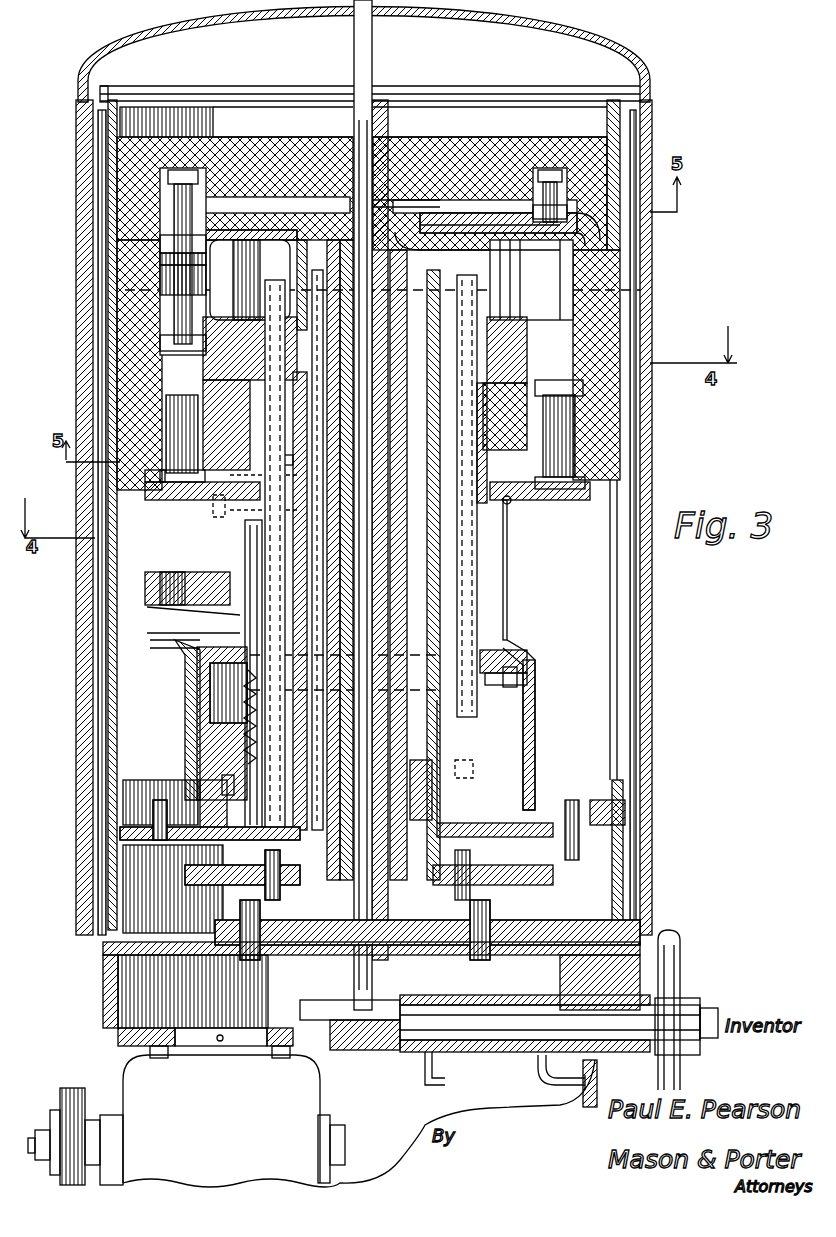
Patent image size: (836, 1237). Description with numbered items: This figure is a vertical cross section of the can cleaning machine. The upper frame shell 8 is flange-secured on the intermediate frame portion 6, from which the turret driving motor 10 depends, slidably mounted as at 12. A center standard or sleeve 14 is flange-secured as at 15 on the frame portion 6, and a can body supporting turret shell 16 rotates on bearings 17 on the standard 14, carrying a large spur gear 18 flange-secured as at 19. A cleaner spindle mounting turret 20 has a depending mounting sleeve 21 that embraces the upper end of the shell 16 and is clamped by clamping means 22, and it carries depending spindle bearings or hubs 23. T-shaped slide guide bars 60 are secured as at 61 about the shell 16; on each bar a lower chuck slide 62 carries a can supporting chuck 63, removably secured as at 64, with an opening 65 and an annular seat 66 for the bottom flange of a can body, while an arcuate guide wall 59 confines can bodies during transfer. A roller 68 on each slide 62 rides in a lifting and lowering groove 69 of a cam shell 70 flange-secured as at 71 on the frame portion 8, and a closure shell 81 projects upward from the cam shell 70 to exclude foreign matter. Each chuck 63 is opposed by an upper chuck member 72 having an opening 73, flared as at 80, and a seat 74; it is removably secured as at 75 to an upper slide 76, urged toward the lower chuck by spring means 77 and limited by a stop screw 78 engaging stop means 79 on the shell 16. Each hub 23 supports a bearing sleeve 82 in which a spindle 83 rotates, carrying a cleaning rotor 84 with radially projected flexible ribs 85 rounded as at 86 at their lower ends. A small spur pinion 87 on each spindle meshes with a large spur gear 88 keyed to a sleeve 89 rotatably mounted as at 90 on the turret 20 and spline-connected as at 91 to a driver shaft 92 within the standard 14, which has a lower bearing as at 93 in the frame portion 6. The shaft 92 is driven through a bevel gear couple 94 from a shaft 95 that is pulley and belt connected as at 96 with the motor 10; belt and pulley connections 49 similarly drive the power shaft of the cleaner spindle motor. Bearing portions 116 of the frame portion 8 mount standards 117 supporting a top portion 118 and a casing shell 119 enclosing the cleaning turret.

The intermediate frame portion 6 is at (104, 986).
The upper frame shell 8 is at (625, 806).
The feeding mechanism and can supporting or cleaning turret driving motor 10 is at (347, 1121).
The slidable mounting 12 is at (175, 1035).
The center standard or sleeve 14 is at (398, 645).
The flange connection 15 is at (520, 930).
The can body supporting turret shell 16 is at (460, 746).
The bearings 17 is at (420, 370).
The large spur gear 18 is at (620, 862).
The flange connection 19 is at (465, 880).
The cleaner spindle mounting turret 20 is at (600, 216).
The depending mounting sleeve 21 is at (355, 380).
The clamping means 22 is at (569, 434).
The spindle bearings or hubs 23 is at (118, 303).
The belt and pulley connections 49 is at (72, 1100).
The arcuate guide wall 59 is at (213, 523).
The T-shaped slide guide bars 60 is at (507, 585).
The securing means 61 is at (474, 776).
The lower chuck slide 62 is at (250, 838).
The can supporting chuck 63 is at (255, 580).
The removable securing means 64 is at (180, 652).
The opening 65 is at (148, 574).
The annular recess or seat 66 is at (165, 612).
The roller 68 is at (205, 745).
The lifting and lowering groove 69 is at (222, 780).
The cam shell 70 is at (530, 672).
The flange connection 71 is at (600, 790).
The upper chuck member 72 is at (150, 492).
The opening 73 is at (280, 408).
The annular recess or seat 74 is at (170, 517).
The removable securing means 75 is at (240, 520).
The upper slide 76 is at (255, 527).
The spring means 77 is at (195, 690).
The stop screw 78 is at (297, 463).
The stop means 79 is at (511, 502).
The flared opening portion 80 is at (148, 476).
The closure shell 81 is at (205, 645).
The bearing sleeve 82 is at (160, 258).
The spindle 83 is at (160, 288).
The cleaning element or rotor 84 is at (165, 400).
The radially projected flexible ribs 85 is at (160, 407).
The rounded lower ends 86 is at (160, 452).
The bolt 87 is at (140, 205).
The large spur gear 88 is at (545, 190).
The sleeve 89 is at (405, 213).
The rotatable mounting 90 is at (430, 220).
The spline connection 91 is at (375, 205).
The driver shaft 92 is at (365, 112).
The rotative bearing 93 is at (400, 962).
The bevel gear couple 94 is at (440, 1062).
The shaft 95 is at (553, 1027).
The pulley and belt connection 96 is at (690, 966).
The bearing portions 116 is at (95, 815).
The standards 117 is at (95, 766).
The top portion 118 is at (590, 64).
The casing shell 119 is at (115, 162).